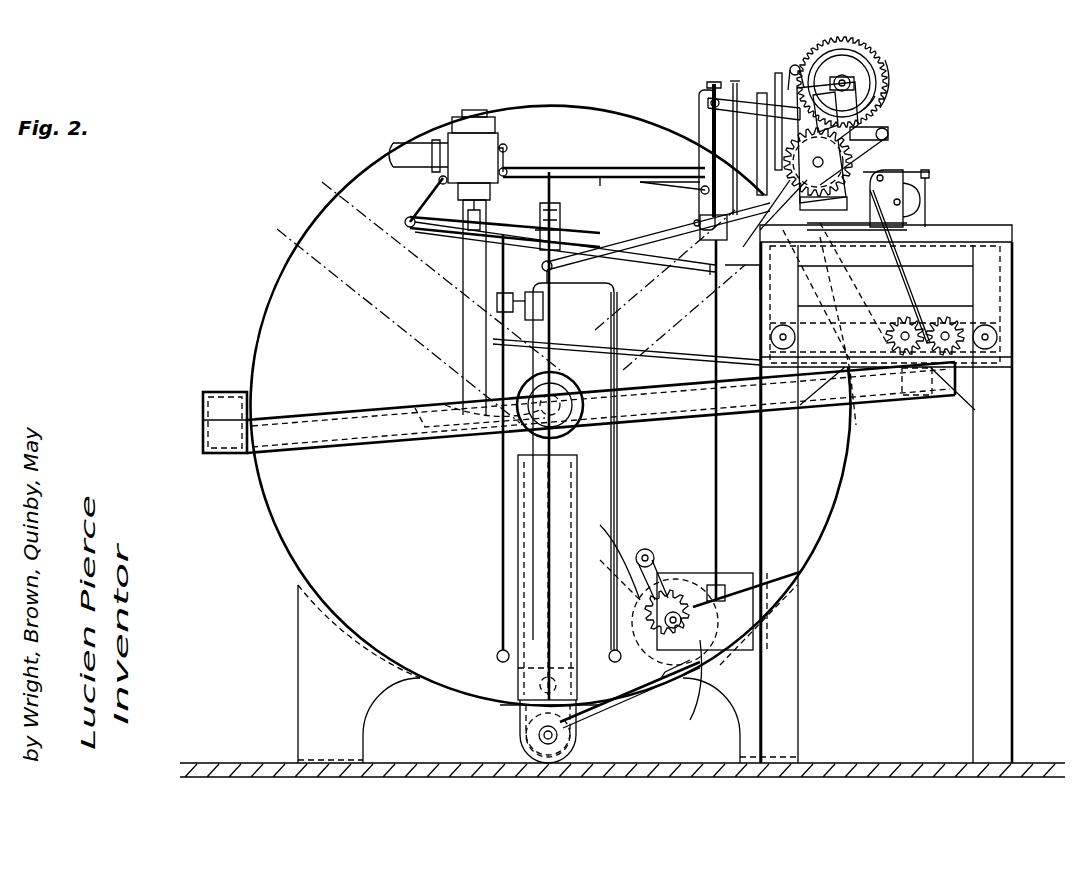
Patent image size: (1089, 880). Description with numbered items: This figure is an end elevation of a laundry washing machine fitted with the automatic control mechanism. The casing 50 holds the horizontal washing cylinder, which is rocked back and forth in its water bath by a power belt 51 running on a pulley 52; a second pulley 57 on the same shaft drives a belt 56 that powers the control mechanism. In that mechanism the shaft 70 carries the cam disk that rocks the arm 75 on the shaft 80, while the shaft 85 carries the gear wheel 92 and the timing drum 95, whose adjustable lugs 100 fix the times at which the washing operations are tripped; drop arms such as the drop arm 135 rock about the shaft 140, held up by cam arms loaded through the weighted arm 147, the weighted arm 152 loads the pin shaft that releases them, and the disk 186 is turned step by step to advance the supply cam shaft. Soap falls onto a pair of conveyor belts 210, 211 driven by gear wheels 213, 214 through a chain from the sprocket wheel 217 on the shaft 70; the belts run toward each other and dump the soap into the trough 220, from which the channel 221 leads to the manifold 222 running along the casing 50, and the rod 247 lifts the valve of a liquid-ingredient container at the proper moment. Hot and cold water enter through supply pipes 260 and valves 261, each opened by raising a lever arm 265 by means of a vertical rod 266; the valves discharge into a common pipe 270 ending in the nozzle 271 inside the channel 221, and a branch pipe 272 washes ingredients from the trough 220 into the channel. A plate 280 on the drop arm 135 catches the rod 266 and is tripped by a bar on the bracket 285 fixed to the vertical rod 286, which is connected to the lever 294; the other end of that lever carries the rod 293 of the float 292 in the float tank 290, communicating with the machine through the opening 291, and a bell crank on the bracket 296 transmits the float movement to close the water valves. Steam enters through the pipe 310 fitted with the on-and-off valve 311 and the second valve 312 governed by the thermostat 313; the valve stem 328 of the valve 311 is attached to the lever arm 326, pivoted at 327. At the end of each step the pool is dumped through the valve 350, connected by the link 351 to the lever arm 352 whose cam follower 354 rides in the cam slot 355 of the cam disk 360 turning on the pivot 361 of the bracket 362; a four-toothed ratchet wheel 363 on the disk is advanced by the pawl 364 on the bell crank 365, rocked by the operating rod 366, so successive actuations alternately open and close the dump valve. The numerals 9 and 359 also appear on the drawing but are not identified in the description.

The casing 50 is at (268, 300).
The power belt 51 is at (390, 296).
The pulley 52 is at (568, 430).
The belt 56 is at (625, 292).
The pulley 57 is at (568, 382).
The shaft 70 is at (852, 158).
The arm 75 is at (794, 64).
The shaft 80 is at (803, 223).
The shaft 85 is at (872, 92).
The gear wheel 92 is at (850, 58).
The lever 9 is at (876, 72).
The drum 95 is at (892, 70).
The timing lugs 100 is at (838, 45).
The drop arm 135 is at (759, 130).
The shaft 140 is at (890, 132).
The weighted arm 147 is at (771, 109).
The weighted arm 152 is at (699, 130).
The disk 186 is at (921, 198).
The conveyor belt 210 is at (860, 395).
The conveyor belt 211 is at (965, 372).
The gear wheel 213 is at (948, 318).
The gear wheel 214 is at (900, 318).
The sprocket wheel 217 is at (892, 128).
The trough 220 is at (915, 400).
The channel 221 is at (330, 432).
The manifold 222 is at (203, 403).
The rod 247 is at (928, 215).
The supply pipes 260 is at (415, 150).
The valves 261 is at (478, 118).
The lever arm 265 is at (430, 240).
The vertical rod 266 is at (690, 188).
The pipe 270 is at (468, 302).
The nozzle 271 is at (425, 405).
The branch pipe 272 is at (683, 333).
The plate 280 is at (706, 103).
The bracket 285 is at (728, 72).
The vertical rod 286 is at (735, 80).
The float tank 290 is at (500, 570).
The opening 291 is at (505, 672).
The float 292 is at (520, 708).
The rod 293 is at (548, 322).
The lever 294 is at (668, 238).
The bracket 296 is at (695, 222).
The steam supply pipe 310 is at (500, 482).
The on-and-off valve 311 is at (560, 225).
The second valve 312 is at (543, 266).
The thermostat 313 is at (545, 300).
The lever arm 326 is at (600, 177).
The pivot 327 is at (508, 168).
The valve stem 328 is at (540, 195).
The dump valve 350 is at (578, 738).
The link 351 is at (620, 700).
The lever arm 352 is at (660, 665).
The cam follower 354 is at (612, 566).
The cam slot 355 is at (718, 660).
The pivot 359 is at (645, 550).
The cam disk 360 is at (690, 592).
The pivot 361 is at (697, 698).
The bracket 362 is at (735, 590).
The ratchet wheel 363 is at (665, 622).
The pawl 364 is at (625, 540).
The bell crank 365 is at (670, 580).
The operating rod 366 is at (713, 462).